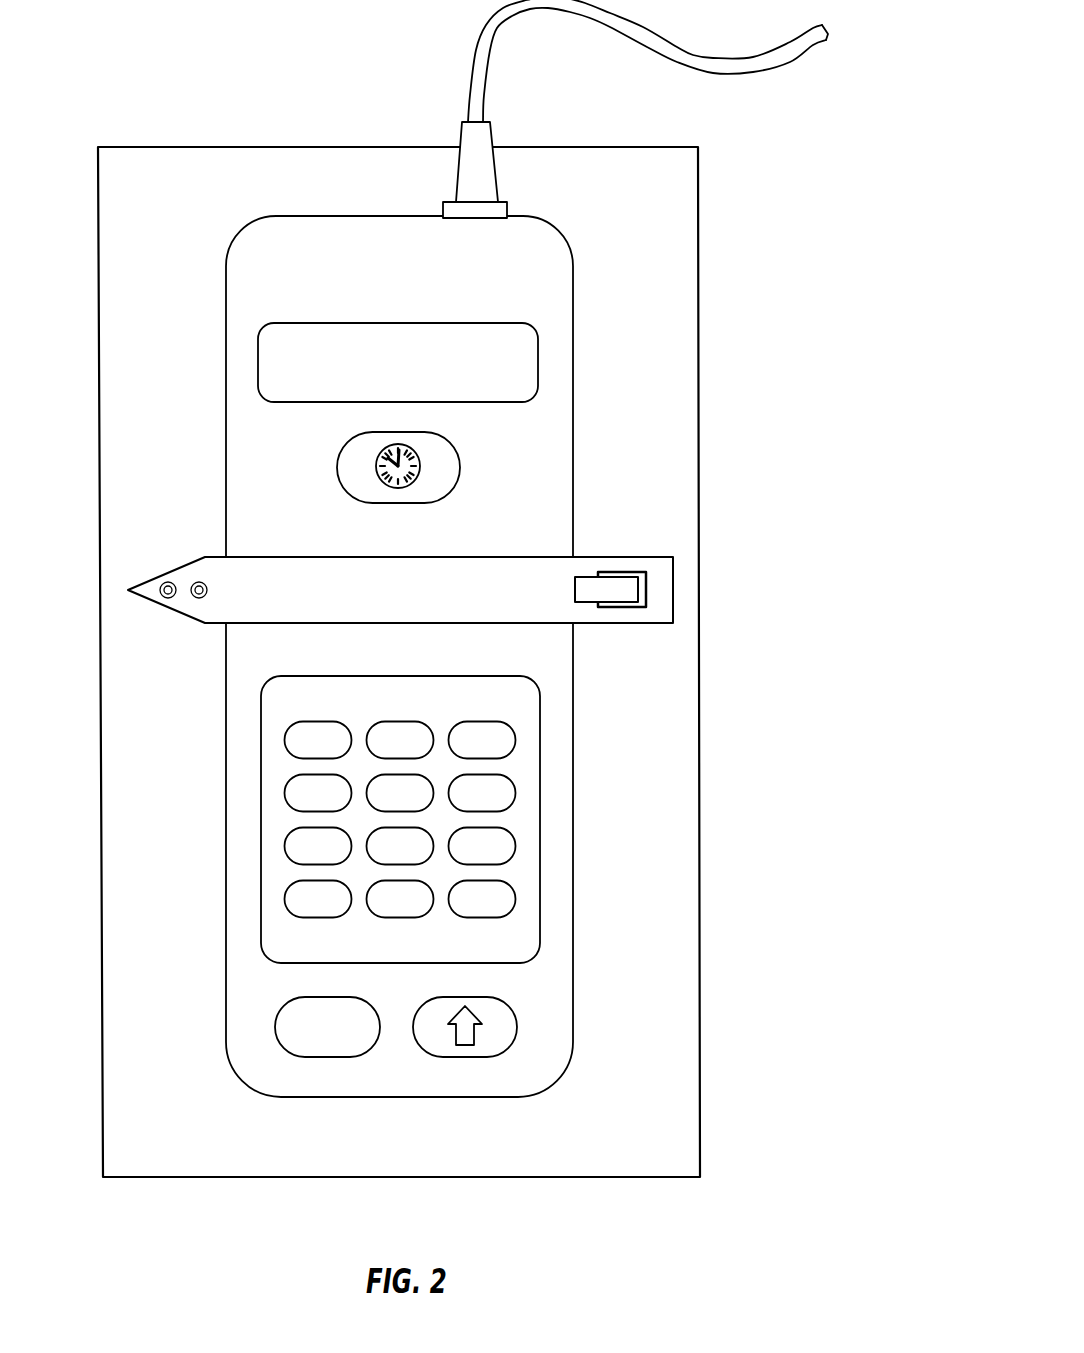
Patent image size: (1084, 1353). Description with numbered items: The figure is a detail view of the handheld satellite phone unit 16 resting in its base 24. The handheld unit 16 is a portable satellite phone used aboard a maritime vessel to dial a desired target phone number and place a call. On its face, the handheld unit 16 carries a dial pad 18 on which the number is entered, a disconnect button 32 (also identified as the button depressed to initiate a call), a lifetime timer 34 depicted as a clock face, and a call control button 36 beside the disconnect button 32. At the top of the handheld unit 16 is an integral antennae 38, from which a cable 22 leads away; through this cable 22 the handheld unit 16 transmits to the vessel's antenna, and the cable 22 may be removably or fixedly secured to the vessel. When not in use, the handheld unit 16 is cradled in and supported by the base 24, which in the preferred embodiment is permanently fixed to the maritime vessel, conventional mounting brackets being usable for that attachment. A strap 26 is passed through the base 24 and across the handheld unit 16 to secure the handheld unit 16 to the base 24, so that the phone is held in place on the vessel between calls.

The handheld satellite phone unit 16 is at (226, 296).
The dial pad 18 is at (540, 718).
The cable 22 is at (470, 72).
The base 24 is at (148, 146).
The strap 26 is at (290, 583).
The disconnect button 32 is at (275, 1027).
The lifetime timer 34 is at (460, 467).
The call control button 36 is at (517, 1027).
The integral antennae 38 is at (470, 141).